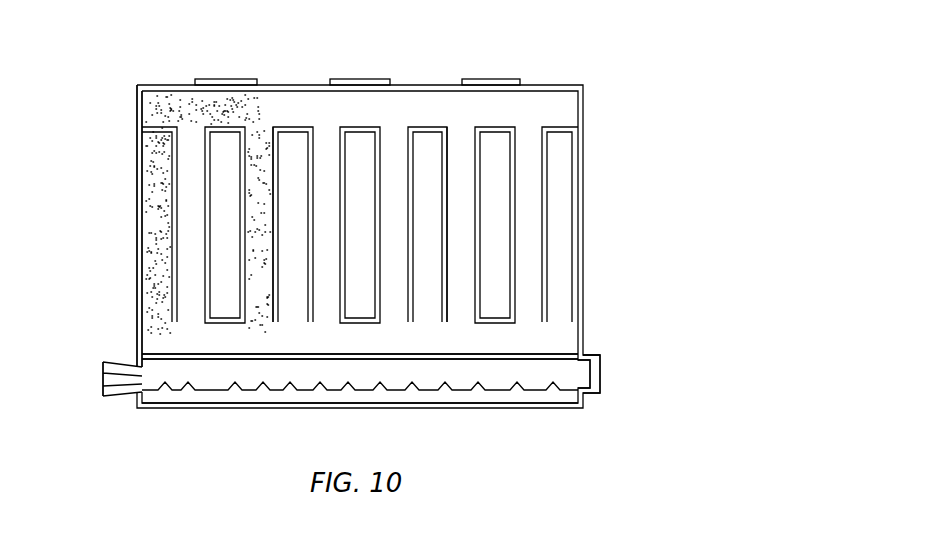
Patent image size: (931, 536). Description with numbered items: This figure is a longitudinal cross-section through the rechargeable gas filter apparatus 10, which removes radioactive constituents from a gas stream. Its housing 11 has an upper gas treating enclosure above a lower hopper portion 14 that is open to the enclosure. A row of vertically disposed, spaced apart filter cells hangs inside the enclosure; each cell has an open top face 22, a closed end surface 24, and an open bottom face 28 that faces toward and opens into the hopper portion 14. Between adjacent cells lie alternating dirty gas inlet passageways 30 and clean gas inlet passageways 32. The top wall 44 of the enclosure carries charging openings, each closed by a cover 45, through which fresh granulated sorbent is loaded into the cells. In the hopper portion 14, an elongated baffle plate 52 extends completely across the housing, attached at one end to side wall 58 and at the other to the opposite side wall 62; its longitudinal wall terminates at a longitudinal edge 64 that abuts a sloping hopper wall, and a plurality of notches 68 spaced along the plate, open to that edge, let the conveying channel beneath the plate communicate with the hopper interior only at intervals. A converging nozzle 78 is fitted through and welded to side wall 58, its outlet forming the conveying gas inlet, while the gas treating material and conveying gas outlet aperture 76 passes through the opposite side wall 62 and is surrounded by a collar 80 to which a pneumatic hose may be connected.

The rechargeable gas filter apparatus 10 is at (600, 100).
The housing 11 is at (645, 160).
The lower hopper portion 14 is at (557, 325).
The open top face 22 is at (327, 122).
The closed end surface 24 is at (142, 380).
The open bottom face 28 is at (279, 309).
The dirty gas inlet passageway 30 is at (231, 229).
The clean gas inlet passageway 32 is at (162, 229).
The top wall 44 is at (164, 86).
The cover 45 is at (234, 80).
The elongated baffle plate 52 is at (510, 356).
The side wall 58 is at (142, 243).
The opposite side wall 62 is at (583, 248).
The longitudinal edge 64 is at (540, 391).
The notch 68 is at (233, 391).
The gas treating material and conveying gas outlet aperture 76 is at (590, 374).
The converging nozzle 78 is at (110, 396).
The collar 80 is at (592, 356).